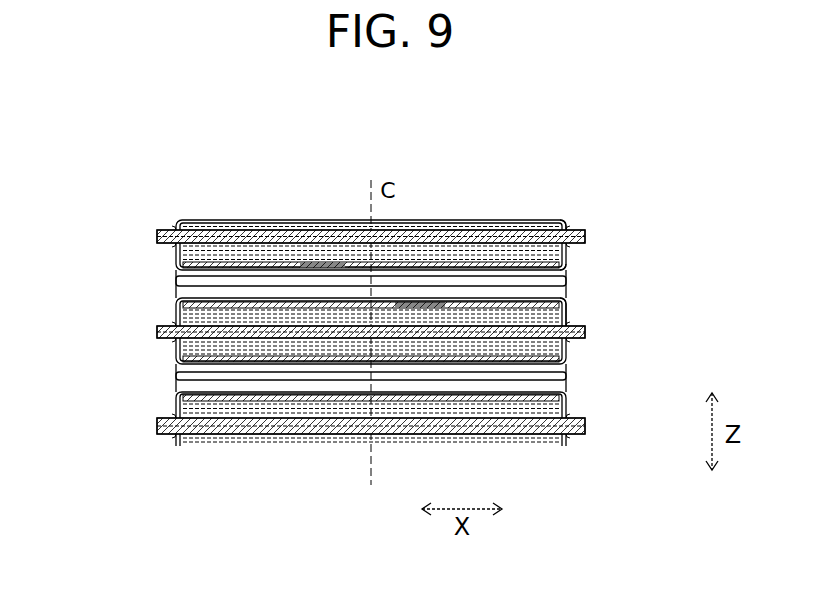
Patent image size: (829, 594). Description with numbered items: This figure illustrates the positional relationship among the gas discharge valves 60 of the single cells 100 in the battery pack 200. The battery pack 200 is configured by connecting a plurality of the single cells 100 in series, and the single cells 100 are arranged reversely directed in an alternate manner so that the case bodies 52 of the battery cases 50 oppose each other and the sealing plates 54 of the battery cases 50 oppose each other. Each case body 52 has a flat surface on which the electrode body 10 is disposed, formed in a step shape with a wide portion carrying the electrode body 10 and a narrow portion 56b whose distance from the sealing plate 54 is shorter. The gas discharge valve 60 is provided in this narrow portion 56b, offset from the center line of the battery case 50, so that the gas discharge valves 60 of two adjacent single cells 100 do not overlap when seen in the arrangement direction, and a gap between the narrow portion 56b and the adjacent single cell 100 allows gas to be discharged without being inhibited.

The battery pack 200 is at (156, 136).
The single cell 100 is at (600, 222).
The battery case 50 is at (165, 224).
The case body 52 is at (569, 220).
The sealing plate 54 is at (586, 233).
The narrow portion 56b is at (455, 298).
The electrode body 10 is at (254, 250).
The gas discharge valve 60 is at (330, 268).